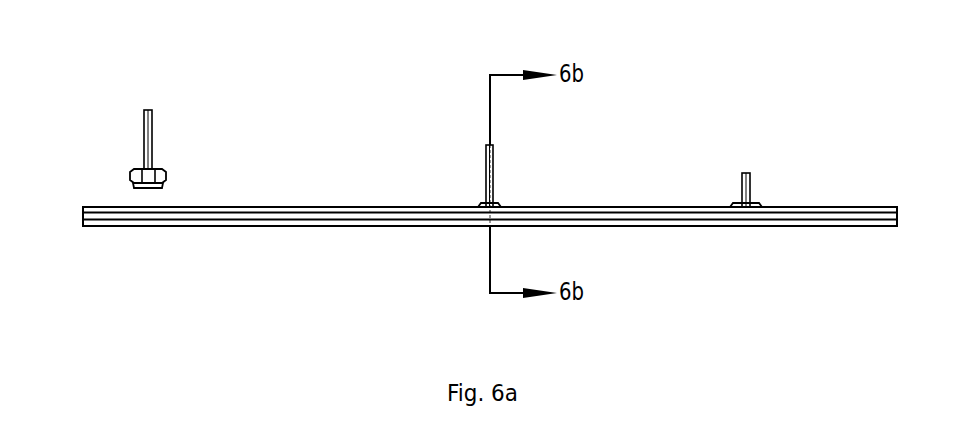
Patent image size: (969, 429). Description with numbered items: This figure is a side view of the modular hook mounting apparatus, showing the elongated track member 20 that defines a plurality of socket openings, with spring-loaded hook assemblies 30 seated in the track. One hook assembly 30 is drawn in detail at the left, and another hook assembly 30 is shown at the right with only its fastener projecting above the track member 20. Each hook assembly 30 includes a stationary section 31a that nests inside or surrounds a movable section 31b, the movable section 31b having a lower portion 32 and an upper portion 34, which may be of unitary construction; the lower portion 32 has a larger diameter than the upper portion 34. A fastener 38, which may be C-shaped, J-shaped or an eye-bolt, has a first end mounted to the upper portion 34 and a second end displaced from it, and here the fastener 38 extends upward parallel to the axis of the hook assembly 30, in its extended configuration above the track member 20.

The track member 20 is at (618, 176).
The hook assembly 30 is at (196, 117).
The stationary section 31a is at (207, 193).
The movable section 31b is at (167, 178).
The lower portion 32 is at (131, 177).
The upper portion 34 is at (139, 169).
The fastener 38 is at (149, 109).